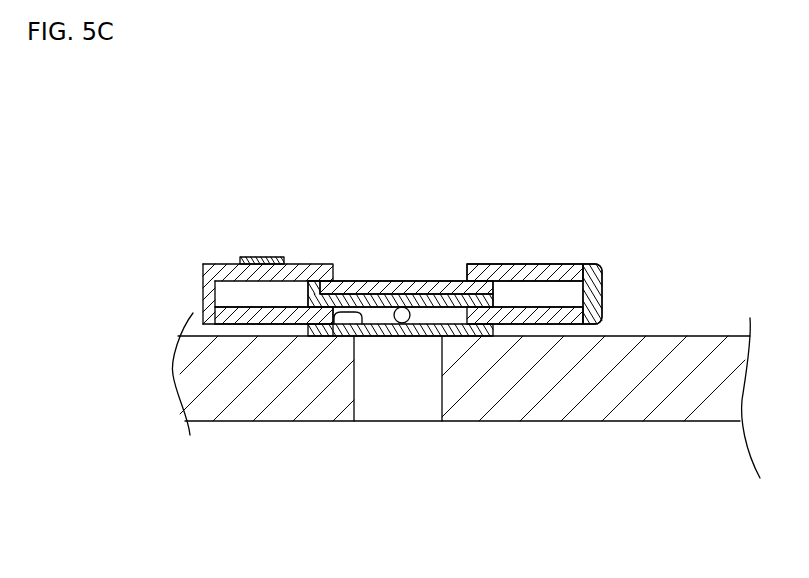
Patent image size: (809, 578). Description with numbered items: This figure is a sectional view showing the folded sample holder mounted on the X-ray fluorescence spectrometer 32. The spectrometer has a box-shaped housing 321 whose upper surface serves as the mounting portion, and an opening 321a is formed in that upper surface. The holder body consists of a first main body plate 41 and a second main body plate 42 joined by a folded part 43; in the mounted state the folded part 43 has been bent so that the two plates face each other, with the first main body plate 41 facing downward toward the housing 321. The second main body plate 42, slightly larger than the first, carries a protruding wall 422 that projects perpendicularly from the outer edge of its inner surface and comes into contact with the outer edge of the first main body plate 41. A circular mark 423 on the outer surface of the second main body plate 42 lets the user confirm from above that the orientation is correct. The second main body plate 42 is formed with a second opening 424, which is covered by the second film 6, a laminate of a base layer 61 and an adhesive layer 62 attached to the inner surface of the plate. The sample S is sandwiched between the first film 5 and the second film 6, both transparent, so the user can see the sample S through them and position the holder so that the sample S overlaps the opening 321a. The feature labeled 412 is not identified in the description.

The X-ray fluorescence spectrometer 32 is at (712, 421).
The housing 321 is at (247, 405).
The opening 321a is at (440, 410).
The first main body plate 41 is at (293, 325).
The protrusion 412 is at (363, 324).
The second main body plate 42 is at (558, 272).
The protruding wall 422 is at (203, 295).
The mark 423 is at (262, 257).
The second opening 424 is at (467, 272).
The folded part 43 is at (600, 280).
The first film 5 is at (478, 336).
The second film 6 is at (401, 281).
The base layer 61 is at (367, 285).
The adhesive layer 62 is at (325, 290).
The sample S is at (385, 322).